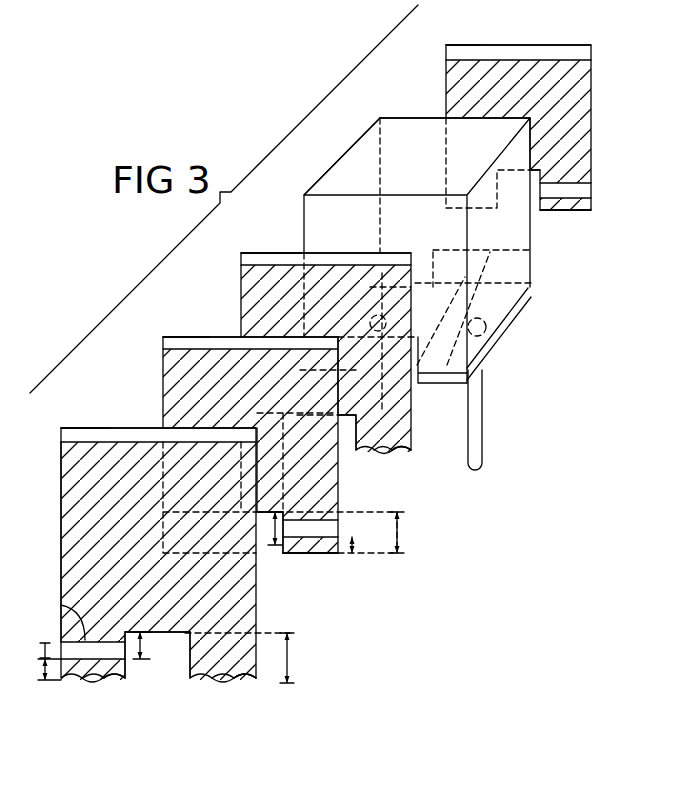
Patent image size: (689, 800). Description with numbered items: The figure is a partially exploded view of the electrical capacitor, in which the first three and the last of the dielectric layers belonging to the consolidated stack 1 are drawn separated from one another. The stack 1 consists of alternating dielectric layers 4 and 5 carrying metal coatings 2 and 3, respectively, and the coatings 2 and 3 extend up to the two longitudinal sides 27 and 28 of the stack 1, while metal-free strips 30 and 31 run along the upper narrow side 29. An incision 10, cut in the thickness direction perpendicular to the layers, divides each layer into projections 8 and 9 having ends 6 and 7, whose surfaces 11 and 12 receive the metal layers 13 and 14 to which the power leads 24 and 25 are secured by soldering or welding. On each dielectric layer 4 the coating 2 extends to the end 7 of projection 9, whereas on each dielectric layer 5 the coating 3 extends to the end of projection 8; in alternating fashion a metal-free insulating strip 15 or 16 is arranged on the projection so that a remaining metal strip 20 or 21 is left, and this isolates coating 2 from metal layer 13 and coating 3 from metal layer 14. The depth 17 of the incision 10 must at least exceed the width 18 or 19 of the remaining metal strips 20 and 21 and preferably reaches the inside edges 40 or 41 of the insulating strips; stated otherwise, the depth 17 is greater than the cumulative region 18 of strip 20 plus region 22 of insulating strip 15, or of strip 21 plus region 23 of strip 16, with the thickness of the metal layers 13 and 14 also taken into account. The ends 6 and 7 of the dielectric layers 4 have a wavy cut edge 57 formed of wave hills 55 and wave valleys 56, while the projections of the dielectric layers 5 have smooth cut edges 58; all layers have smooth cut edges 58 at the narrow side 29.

The consolidated stack 1 is at (372, 148).
The coating 2 is at (90, 565).
The coating 3 is at (572, 117).
The dielectric layer 4 is at (61, 470).
The dielectric layer 5 is at (163, 385).
The end 6 is at (481, 213).
The end 7 is at (300, 553).
The projection 8 is at (128, 672).
The projection 9 is at (190, 675).
The incision 10 is at (150, 674).
The surface 11 is at (368, 308).
The surface 12 is at (508, 307).
The metal layer 13 is at (292, 428).
The metal layer 14 is at (498, 330).
The metal-free insulating strip 15 is at (61, 645).
The metal-free insulating strip 16 is at (338, 530).
The depth of the incision 17 is at (287, 658).
The width of the remaining metal strip 18 is at (45, 685).
The width of the remaining metal strip 19 is at (354, 548).
The remaining metal strip 20 is at (94, 690).
The remaining metal strip 21 is at (320, 553).
The region of the metal-free insulating strip 22 is at (143, 652).
The region of the metal-free strip 23 is at (281, 513).
The power lead 24 is at (372, 426).
The power lead 25 is at (483, 430).
The longitudinal side 27 is at (342, 170).
The longitudinal side 28 is at (256, 615).
The narrow side 29 is at (418, 150).
The metal-free strip 30 is at (90, 430).
The metal-free strip 31 is at (190, 337).
The inside edge 40 is at (61, 606).
The inside edge 41 is at (345, 503).
The wave hill 55 is at (106, 678).
The wave valley 56 is at (80, 682).
The wavy cut edge 57 is at (262, 683).
The smooth cut edge 58 is at (490, 45).